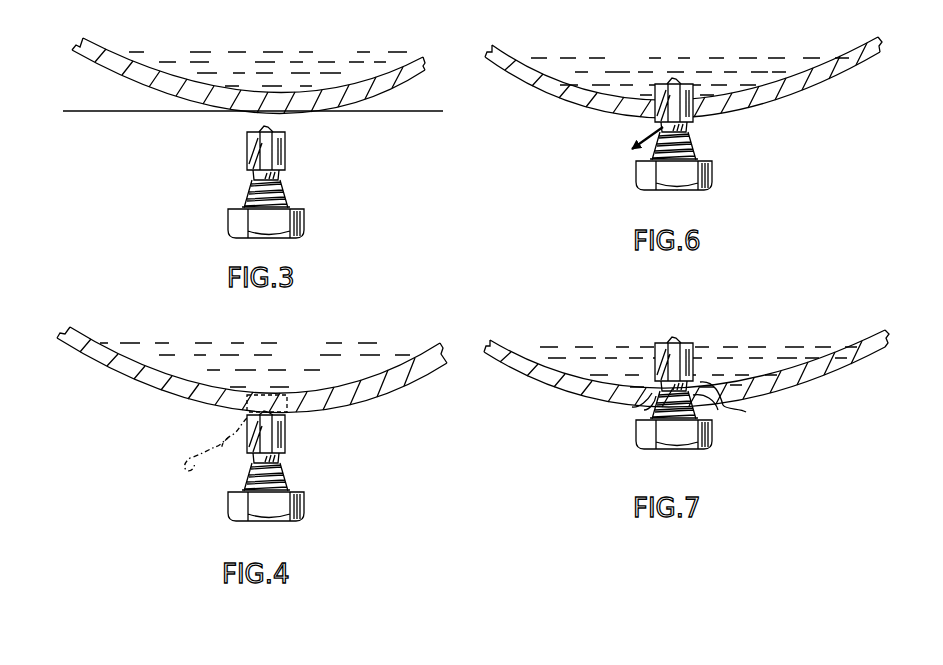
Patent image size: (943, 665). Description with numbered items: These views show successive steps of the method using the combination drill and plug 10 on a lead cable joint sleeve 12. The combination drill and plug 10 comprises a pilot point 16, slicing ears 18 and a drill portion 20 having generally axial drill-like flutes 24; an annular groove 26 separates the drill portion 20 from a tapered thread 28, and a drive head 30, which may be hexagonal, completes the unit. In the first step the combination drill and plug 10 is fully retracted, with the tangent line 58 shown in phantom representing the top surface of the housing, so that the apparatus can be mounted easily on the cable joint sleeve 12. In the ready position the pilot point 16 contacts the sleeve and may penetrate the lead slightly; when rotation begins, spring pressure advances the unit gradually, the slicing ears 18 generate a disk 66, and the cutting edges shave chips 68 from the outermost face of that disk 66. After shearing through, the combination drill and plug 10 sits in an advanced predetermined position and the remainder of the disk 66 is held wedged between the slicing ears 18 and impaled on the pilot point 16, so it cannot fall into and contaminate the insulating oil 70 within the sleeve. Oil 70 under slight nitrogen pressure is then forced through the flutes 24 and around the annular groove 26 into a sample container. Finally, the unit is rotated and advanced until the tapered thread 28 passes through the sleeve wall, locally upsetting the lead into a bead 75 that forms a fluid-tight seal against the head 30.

In FIG. 3, the combination drill and plug 10 is at (270, 185).
In FIG. 4, the combination drill and plug 10 is at (287, 444).
In FIG. 6, the combination drill and plug 10 is at (674, 128).
In FIG. 7, the combination drill and plug 10 is at (668, 390).
In FIG. 3, the cable joint sleeve 12 is at (92, 68).
In FIG. 4, the cable joint sleeve 12 is at (93, 364).
In FIG. 6, the cable joint sleeve 12 is at (571, 105).
In FIG. 7, the cable joint sleeve 12 is at (548, 387).
In FIG. 3, the pilot point 16 is at (268, 128).
In FIG. 4, the pilot point 16 is at (266, 403).
In FIG. 6, the pilot point 16 is at (688, 84).
In FIG. 7, the pilot point 16 is at (674, 362).
In FIG. 3, the slicing ears 18 is at (250, 131).
In FIG. 4, the slicing ears 18 is at (286, 417).
In FIG. 6, the slicing ears 18 is at (655, 87).
In FIG. 7, the slicing ears 18 is at (654, 345).
In FIG. 4, the drill portion 20 is at (284, 438).
In FIG. 3, the drill-like flutes 24 is at (258, 171).
In FIG. 4, the drill-like flutes 24 is at (281, 452).
In FIG. 6, the drill-like flutes 24 is at (680, 108).
In FIG. 7, the drill-like flutes 24 is at (665, 342).
In FIG. 3, the annular groove 26 is at (284, 172).
In FIG. 6, the annular groove 26 is at (692, 128).
In FIG. 7, the annular groove 26 is at (717, 383).
In FIG. 3, the tapered thread 28 is at (286, 197).
In FIG. 4, the tapered thread 28 is at (288, 478).
In FIG. 6, the tapered thread 28 is at (696, 147).
In FIG. 7, the tapered thread 28 is at (642, 407).
In FIG. 3, the drive head 30 is at (250, 235).
In FIG. 4, the drive head 30 is at (304, 508).
In FIG. 6, the drive head 30 is at (643, 184).
In FIG. 7, the drive head 30 is at (713, 434).
In FIG. 3, the tangent line 58 is at (135, 115).
In FIG. 3, the disk 66 is at (266, 129).
In FIG. 4, the disk 66 is at (252, 394).
In FIG. 6, the disk 66 is at (671, 82).
In FIG. 7, the disk 66 is at (680, 342).
In FIG. 4, the chips 68 is at (212, 470).
In FIG. 6, the insulating oil 70 is at (588, 63).
In FIG. 7, the insulating oil 70 is at (590, 352).
In FIG. 7, the upsetting bead 75 is at (643, 413).